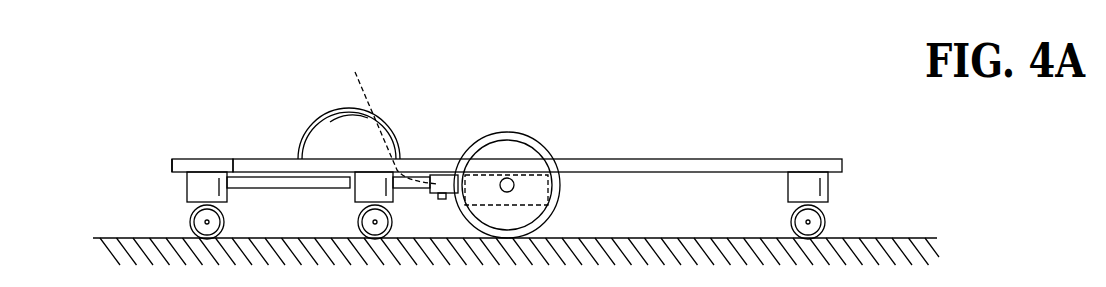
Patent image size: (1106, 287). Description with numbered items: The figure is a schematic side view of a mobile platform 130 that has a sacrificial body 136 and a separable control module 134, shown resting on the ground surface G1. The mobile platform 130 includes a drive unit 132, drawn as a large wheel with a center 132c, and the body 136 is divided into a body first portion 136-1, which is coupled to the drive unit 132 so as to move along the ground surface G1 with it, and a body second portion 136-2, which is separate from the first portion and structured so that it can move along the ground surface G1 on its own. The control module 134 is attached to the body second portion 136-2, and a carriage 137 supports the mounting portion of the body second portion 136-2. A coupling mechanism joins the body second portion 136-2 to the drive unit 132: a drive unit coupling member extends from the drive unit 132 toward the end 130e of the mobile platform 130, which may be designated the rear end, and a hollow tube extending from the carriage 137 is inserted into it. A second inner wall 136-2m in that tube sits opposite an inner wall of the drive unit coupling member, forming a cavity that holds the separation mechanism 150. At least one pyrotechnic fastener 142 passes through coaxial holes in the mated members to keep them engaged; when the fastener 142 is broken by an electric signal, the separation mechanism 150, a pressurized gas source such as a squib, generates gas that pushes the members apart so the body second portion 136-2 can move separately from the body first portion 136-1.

The mobile platform 130 is at (134, 108).
The end of the mobile platform 130e is at (170, 168).
The drive unit 132 is at (506, 162).
The drive wheel center / axle 132c is at (523, 183).
The control module 134 is at (312, 112).
The sacrificial body 136 is at (515, 128).
The body first portion 136-1 is at (620, 159).
The body second portion 136-2 is at (198, 158).
The second inner wall 136-2m is at (372, 116).
The carriage 137 is at (330, 180).
The pyrotechnic fastener 142 is at (442, 199).
The separation mechanism 150 is at (473, 173).
The ground surface G1 is at (910, 238).